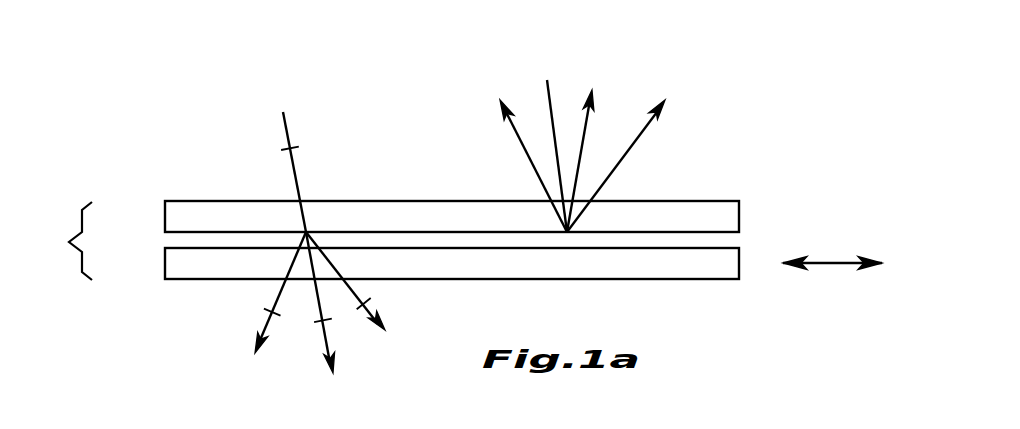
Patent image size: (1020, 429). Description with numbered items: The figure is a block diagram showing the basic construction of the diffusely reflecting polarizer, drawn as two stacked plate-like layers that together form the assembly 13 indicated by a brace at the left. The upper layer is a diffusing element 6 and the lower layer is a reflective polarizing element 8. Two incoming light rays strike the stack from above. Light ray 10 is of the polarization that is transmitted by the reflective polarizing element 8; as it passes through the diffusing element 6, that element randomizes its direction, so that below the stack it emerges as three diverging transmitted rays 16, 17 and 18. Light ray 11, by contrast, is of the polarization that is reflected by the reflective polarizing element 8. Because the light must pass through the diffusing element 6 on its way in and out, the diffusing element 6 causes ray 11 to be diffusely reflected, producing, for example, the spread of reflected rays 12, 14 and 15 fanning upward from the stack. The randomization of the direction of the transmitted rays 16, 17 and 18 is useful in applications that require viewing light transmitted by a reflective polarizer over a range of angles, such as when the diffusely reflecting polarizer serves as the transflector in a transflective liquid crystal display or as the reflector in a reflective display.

The diffusing element 6 is at (165, 212).
The reflective polarizing element 8 is at (165, 266).
The plate assembly (pair of plates) 13 is at (63, 241).
The light ray 10 is at (283, 127).
The light ray 11 is at (548, 93).
The diffusely reflected ray 12 is at (515, 135).
The diffusely reflected ray 14 is at (647, 133).
The diffusely reflected ray 15 is at (589, 118).
The transmitted ray 16 is at (262, 312).
The transmitted ray 17 is at (322, 337).
The transmitted ray 18 is at (372, 306).